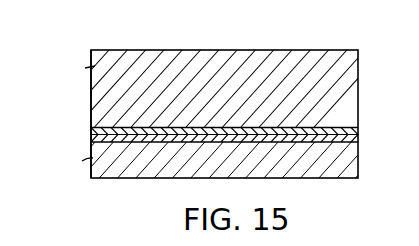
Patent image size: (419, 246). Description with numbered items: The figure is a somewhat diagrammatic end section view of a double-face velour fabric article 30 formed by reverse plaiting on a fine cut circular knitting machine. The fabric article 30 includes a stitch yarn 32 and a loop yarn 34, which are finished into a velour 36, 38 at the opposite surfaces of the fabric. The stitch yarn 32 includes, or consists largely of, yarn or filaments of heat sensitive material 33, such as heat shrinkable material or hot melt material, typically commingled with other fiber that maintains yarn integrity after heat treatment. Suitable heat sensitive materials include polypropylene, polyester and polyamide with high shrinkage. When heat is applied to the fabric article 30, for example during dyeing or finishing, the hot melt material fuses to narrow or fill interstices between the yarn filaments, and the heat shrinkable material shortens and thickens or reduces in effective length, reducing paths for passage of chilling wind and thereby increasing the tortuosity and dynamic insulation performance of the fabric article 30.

The fabric article 30 is at (228, 106).
The stitch yarn 32 is at (245, 162).
The heat sensitive material 33 is at (297, 140).
The loop yarn 34 is at (76, 71).
The velour 36 is at (360, 91).
The velour 38 is at (360, 168).